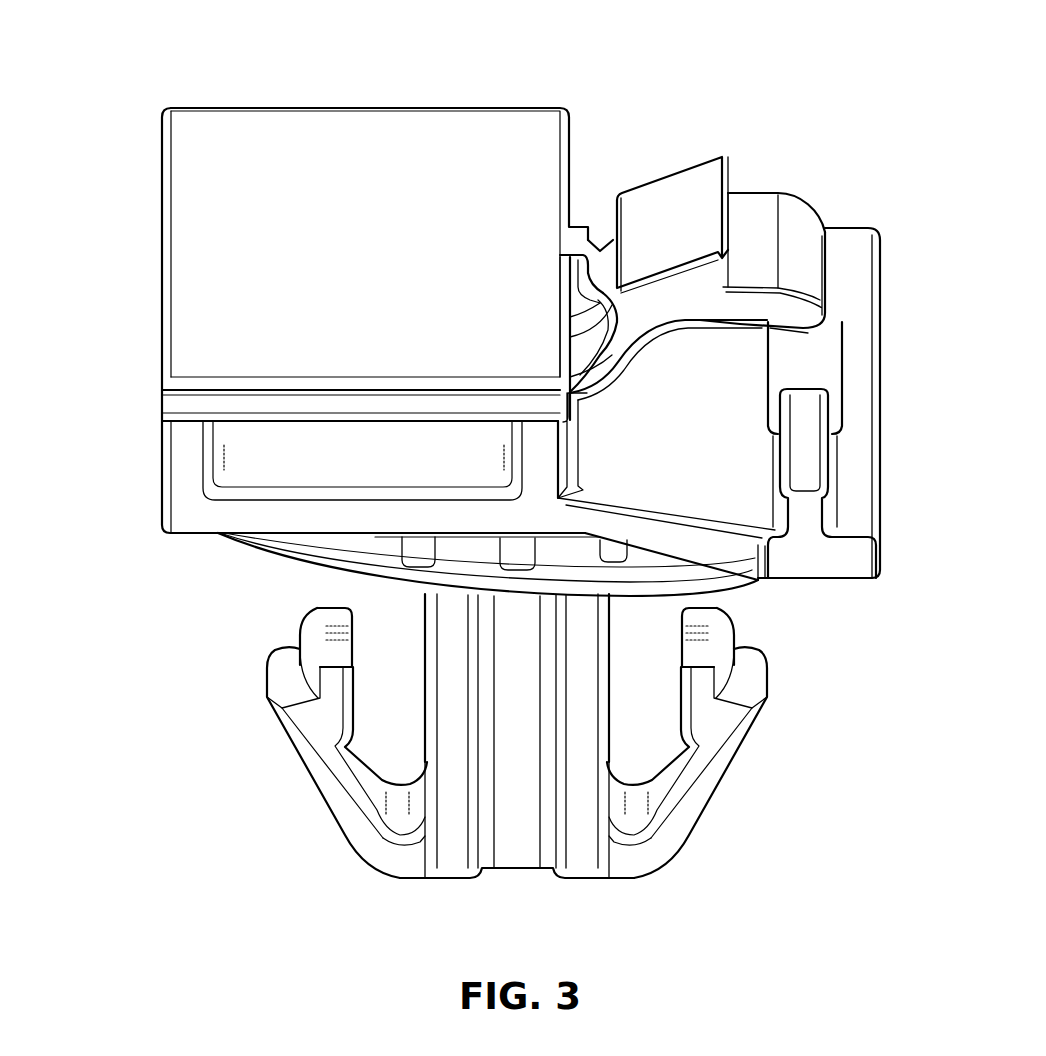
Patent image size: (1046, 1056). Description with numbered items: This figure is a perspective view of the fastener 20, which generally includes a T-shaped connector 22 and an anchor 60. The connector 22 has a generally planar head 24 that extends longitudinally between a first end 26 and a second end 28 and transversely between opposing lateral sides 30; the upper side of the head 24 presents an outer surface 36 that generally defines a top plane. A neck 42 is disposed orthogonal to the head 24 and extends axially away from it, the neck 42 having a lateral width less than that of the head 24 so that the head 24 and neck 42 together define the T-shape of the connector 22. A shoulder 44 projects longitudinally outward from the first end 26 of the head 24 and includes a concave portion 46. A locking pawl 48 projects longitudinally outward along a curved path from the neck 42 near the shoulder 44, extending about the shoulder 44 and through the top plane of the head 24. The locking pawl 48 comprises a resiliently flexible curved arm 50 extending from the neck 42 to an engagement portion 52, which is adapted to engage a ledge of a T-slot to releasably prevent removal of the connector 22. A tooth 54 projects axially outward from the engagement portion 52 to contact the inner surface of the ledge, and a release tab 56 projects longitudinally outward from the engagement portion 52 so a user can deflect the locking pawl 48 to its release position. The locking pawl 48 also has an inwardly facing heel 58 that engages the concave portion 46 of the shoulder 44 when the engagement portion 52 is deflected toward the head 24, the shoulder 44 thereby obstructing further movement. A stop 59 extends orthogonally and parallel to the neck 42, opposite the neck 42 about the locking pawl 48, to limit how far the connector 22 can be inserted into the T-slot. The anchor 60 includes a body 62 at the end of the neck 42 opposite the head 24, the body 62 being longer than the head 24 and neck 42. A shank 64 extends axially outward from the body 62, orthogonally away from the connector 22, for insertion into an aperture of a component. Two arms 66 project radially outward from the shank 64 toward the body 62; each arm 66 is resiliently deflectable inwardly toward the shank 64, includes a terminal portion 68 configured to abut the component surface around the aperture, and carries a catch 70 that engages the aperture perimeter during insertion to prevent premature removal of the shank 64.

The fastener 20 is at (657, 78).
The connector 22 is at (104, 412).
The head 24 is at (162, 238).
The first end 26 is at (568, 138).
The second end 28 is at (161, 148).
The lateral sides 30 is at (183, 402).
The outer surface 36 is at (367, 140).
The neck 42 is at (186, 458).
The shoulder 44 is at (578, 238).
The concave portion 46 is at (600, 250).
The locking pawl 48 is at (685, 165).
The curved arm 50 is at (621, 356).
The engagement portion 52 is at (677, 302).
The tooth 54 is at (734, 212).
The release tab 56 is at (793, 227).
The heel 58 is at (600, 340).
The stop 59 is at (832, 466).
The body 62 is at (700, 553).
The anchor 60 is at (194, 667).
The shank 64 is at (517, 852).
The arms 66 is at (345, 795).
The terminal portion 68 is at (322, 632).
The catch 70 is at (285, 677).